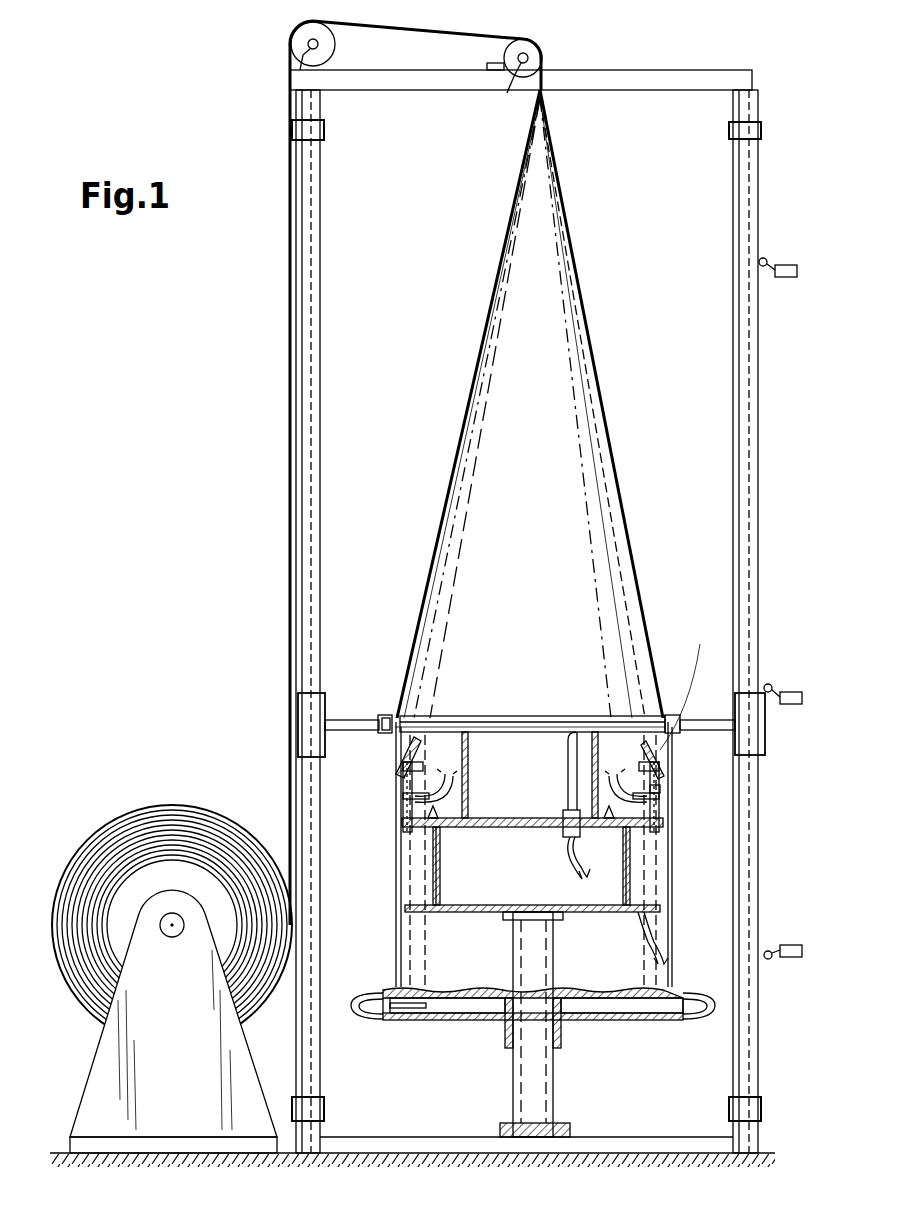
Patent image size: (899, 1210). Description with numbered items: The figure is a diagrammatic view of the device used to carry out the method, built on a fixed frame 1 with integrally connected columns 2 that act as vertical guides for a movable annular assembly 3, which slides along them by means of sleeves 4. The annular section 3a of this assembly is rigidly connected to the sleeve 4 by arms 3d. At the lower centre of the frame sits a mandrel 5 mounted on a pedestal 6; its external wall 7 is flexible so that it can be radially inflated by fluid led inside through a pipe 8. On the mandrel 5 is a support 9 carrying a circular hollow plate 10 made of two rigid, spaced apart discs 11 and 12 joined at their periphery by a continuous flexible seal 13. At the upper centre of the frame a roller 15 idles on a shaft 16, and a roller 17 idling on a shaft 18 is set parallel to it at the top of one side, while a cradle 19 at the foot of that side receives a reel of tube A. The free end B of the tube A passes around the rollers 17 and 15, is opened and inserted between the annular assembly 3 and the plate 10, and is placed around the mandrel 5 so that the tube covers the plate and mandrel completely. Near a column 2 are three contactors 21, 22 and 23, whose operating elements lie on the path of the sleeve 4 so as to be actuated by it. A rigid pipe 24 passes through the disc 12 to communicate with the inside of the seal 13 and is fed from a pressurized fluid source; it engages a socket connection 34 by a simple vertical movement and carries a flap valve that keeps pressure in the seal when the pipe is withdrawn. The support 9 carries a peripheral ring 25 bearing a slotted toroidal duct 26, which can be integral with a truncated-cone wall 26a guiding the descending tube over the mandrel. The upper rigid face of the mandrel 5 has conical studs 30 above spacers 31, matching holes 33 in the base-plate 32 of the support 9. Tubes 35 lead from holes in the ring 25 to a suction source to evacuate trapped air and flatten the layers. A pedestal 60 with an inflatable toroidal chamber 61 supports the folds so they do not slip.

The fixed frame 1 is at (670, 90).
The columns 2 is at (322, 430).
The movable annular assembly 3 is at (680, 714).
The annular section 3a is at (382, 742).
The arms 3d is at (343, 720).
The sleeves 4 is at (300, 704).
The mandrel 5 is at (445, 902).
The pedestal 6 is at (518, 1076).
The external wall 7 is at (668, 850).
The pipe 8 is at (654, 950).
The support 9 is at (468, 768).
The circular hollow plate 10 is at (448, 705).
The disc 11 is at (425, 713).
The disc 12 is at (408, 756).
The flexible seal 13 is at (390, 710).
The roller 15 is at (528, 58).
The shaft 16 is at (514, 92).
The roller 17 is at (294, 34).
The shaft 18 is at (294, 60).
The cradle 19 is at (104, 1080).
The contactor 21 is at (792, 692).
The contactor 22 is at (792, 945).
The contactor 23 is at (788, 265).
The pipe 24 is at (568, 766).
The peripheral ring 25 is at (658, 800).
The toroidal duct 26 is at (664, 770).
The wall 26a is at (695, 683).
The conical studs 30 is at (405, 812).
The spacers 31 is at (433, 874).
The base-plate 32 is at (494, 832).
The holes 33 is at (426, 836).
The socket connection 34 is at (568, 838).
The tube 35 is at (444, 772).
The pedestal 60 is at (612, 1026).
The inflatable toroidal chamber 61 is at (709, 1022).
The tube A is at (123, 821).
The free end B is at (474, 1016).